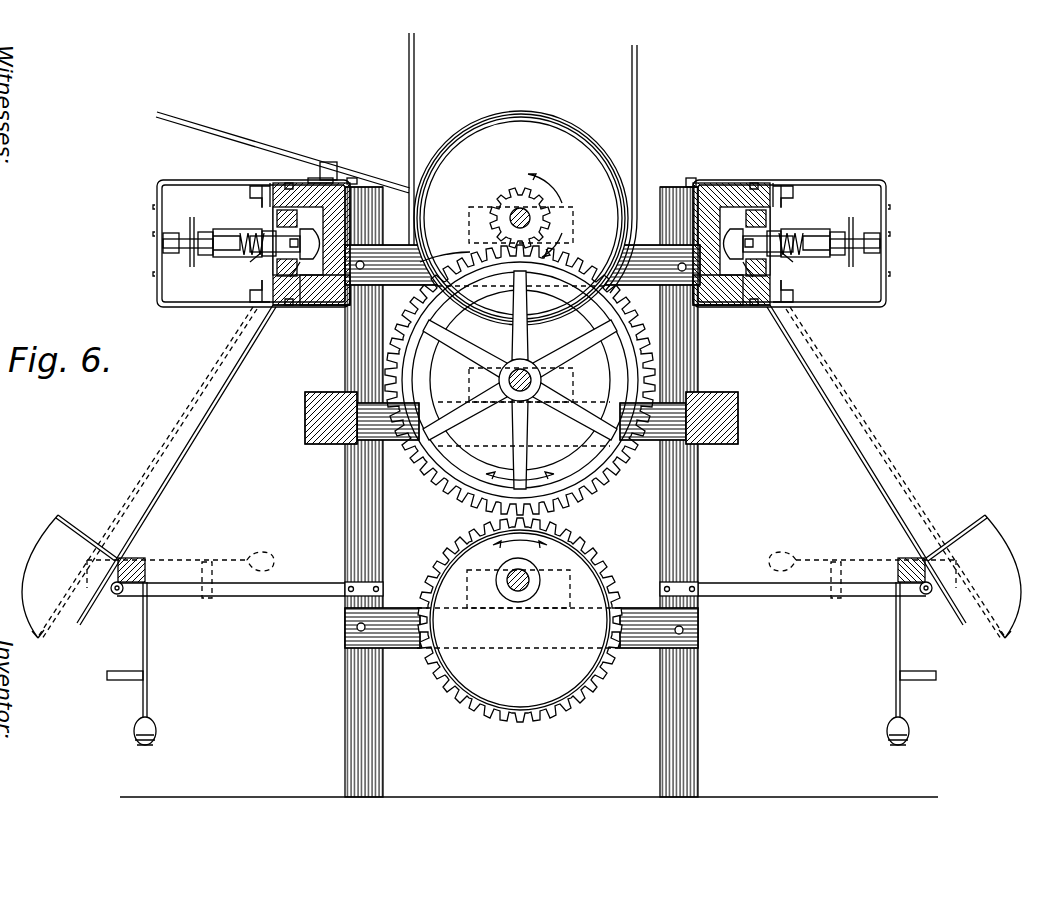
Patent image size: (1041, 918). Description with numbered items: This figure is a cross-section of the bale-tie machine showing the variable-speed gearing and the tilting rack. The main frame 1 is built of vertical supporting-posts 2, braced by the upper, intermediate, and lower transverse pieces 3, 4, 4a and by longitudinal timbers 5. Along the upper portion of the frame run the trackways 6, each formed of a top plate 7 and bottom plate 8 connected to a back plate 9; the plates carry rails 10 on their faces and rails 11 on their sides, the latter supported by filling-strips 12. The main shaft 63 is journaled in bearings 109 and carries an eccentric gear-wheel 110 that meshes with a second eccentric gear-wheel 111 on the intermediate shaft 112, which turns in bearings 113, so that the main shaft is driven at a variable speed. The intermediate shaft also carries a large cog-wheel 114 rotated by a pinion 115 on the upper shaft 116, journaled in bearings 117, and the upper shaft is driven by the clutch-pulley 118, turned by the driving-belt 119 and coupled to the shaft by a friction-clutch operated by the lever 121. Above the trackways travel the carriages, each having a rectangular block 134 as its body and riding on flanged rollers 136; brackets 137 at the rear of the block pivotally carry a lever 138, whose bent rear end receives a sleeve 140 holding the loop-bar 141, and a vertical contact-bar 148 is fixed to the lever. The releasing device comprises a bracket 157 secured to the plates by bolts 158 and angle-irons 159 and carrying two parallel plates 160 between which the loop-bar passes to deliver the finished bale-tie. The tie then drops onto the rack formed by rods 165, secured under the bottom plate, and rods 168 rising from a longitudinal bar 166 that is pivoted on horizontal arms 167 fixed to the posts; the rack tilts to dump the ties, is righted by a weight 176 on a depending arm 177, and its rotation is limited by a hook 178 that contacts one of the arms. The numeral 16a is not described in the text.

The main frame 1 is at (529, 641).
The vertical supporting-posts 2 is at (345, 750).
The upper transverse piece 3 is at (660, 284).
The intermediate transverse piece 4 is at (634, 443).
The lower transverse piece 4a is at (628, 648).
The longitudinal timbers 5 is at (305, 420).
The trackways 6 is at (306, 305).
The top plate 7 is at (300, 183).
The bottom plate 8 is at (330, 305).
The back plates 9 is at (383, 224).
The rails 10 is at (268, 183).
The rails 11 is at (300, 183).
The filling-strips 12 is at (340, 307).
The rod 16a is at (890, 240).
The main shaft 63 is at (522, 600).
The bearings 109 is at (486, 580).
The eccentric gear-wheel 110 is at (520, 620).
The eccentric gear-wheel 111 is at (606, 373).
The intermediate shaft 112 is at (514, 393).
The bearings 113 is at (566, 398).
The cog-wheel 114 is at (468, 258).
The pinion 115 is at (515, 196).
The upper shaft 116 is at (510, 212).
The bearings 117 is at (476, 228).
The clutch-pulley 118 is at (521, 218).
The driving-belt 119 is at (637, 90).
The lever 121 is at (277, 139).
The rectangular block 134 is at (262, 256).
The flanged rollers 136 is at (282, 219).
The brackets 137 is at (262, 232).
The lever 138 is at (238, 257).
The sleeve 140 is at (205, 255).
The loop-bar 141 is at (163, 243).
The contact-bar 148 is at (192, 217).
The bracket 157 is at (196, 182).
The bolts 158 is at (360, 186).
The angle-irons 159 is at (255, 188).
The parallel plates 160 is at (172, 253).
The rods 165 is at (168, 455).
The longitudinal bar 166 is at (915, 560).
The horizontal arms 167 is at (800, 597).
The rods 168 is at (966, 525).
The weight 176 is at (157, 729).
The depending arm 177 is at (148, 695).
The hook 178 is at (107, 676).